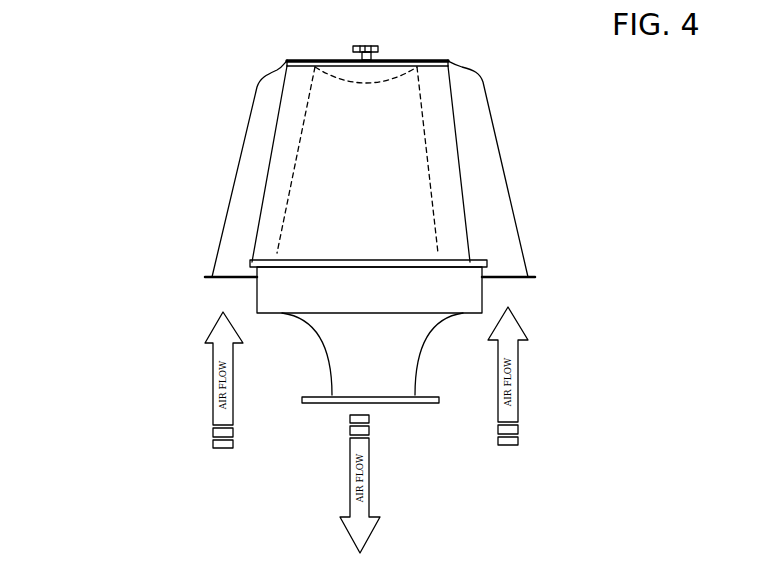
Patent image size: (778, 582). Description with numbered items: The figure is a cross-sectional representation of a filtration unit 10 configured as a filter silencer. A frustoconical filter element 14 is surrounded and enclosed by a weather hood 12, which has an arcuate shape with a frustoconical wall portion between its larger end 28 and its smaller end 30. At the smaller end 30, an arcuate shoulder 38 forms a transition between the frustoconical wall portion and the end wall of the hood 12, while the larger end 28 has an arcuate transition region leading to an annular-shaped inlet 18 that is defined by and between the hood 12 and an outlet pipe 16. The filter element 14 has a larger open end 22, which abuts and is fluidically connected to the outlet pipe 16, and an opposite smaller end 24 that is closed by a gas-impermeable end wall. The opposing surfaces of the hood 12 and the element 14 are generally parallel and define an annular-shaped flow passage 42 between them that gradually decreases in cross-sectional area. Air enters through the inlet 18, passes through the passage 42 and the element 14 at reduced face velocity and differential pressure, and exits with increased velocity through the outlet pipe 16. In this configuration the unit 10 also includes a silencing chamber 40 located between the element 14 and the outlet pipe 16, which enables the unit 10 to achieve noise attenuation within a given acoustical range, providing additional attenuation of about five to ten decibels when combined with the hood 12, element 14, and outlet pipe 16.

The filtration unit 10 is at (100, 92).
The weather hood 12 is at (505, 170).
The filter element 14 is at (285, 138).
The outlet pipe 16 is at (382, 372).
The annular-shaped inlet 18 is at (227, 278).
The open end 22 is at (263, 253).
The smaller end 24 is at (300, 91).
The larger end 28 is at (528, 263).
The smaller end 30 is at (485, 88).
The arcuate shoulder 38 is at (278, 72).
The silencing chamber 40 is at (342, 288).
The annular-shaped flow passage 42 is at (242, 197).